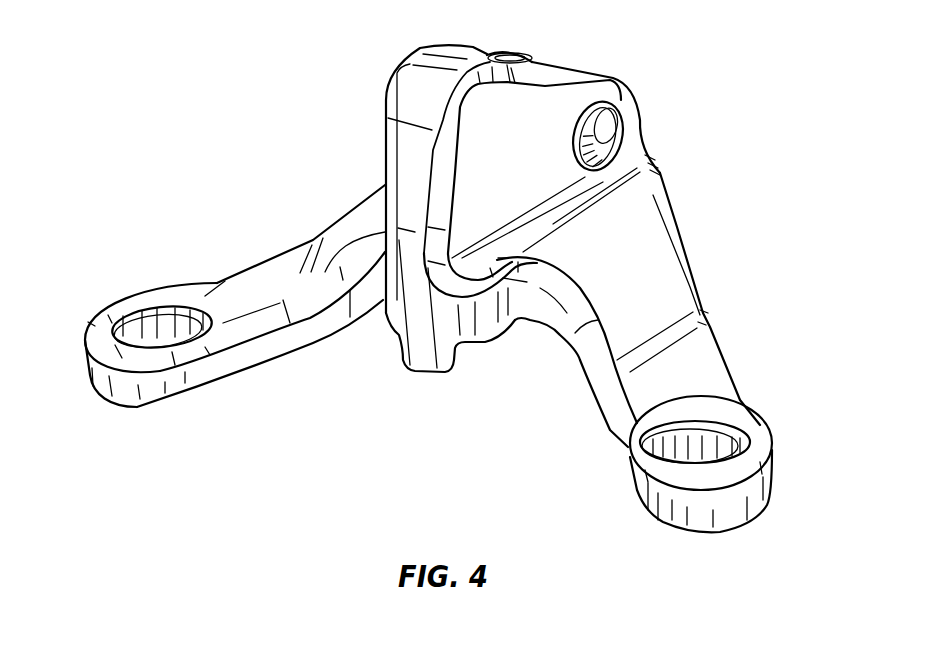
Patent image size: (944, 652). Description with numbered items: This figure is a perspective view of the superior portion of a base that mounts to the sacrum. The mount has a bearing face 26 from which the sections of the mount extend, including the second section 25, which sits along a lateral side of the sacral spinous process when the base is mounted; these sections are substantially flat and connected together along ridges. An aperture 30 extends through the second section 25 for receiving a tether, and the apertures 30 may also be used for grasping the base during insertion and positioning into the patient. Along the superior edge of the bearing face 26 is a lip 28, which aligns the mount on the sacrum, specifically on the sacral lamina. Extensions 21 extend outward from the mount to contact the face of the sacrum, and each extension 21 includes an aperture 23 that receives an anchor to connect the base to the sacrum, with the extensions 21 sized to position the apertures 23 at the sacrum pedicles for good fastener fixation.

The extension 21 is at (643, 283).
The aperture 23 is at (148, 310).
The second section 25 is at (538, 122).
The bearing face 26 is at (427, 92).
The lip 28 is at (450, 373).
The aperture 30 is at (610, 145).